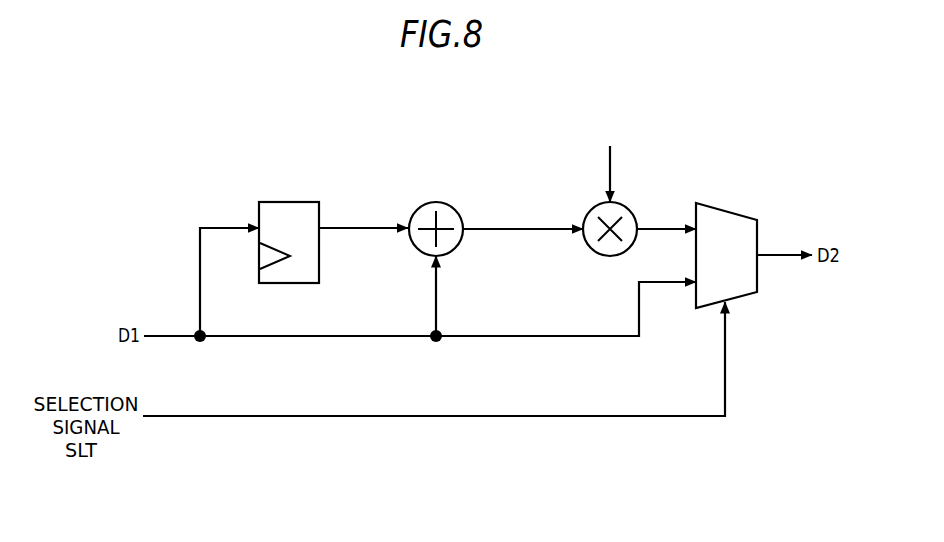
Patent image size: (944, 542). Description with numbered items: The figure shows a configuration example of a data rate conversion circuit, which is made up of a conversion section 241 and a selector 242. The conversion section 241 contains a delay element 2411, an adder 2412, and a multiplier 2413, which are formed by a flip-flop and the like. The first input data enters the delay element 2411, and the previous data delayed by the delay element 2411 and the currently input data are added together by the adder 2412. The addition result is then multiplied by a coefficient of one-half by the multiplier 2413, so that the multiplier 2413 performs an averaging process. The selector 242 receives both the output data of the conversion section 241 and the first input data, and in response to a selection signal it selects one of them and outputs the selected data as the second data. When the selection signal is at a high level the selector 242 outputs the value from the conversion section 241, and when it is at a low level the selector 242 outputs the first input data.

The conversion section 241 is at (543, 299).
The delay element 2411 is at (288, 202).
The adder 2412 is at (435, 202).
The multiplier 2413 is at (627, 207).
The selector 242 is at (727, 207).